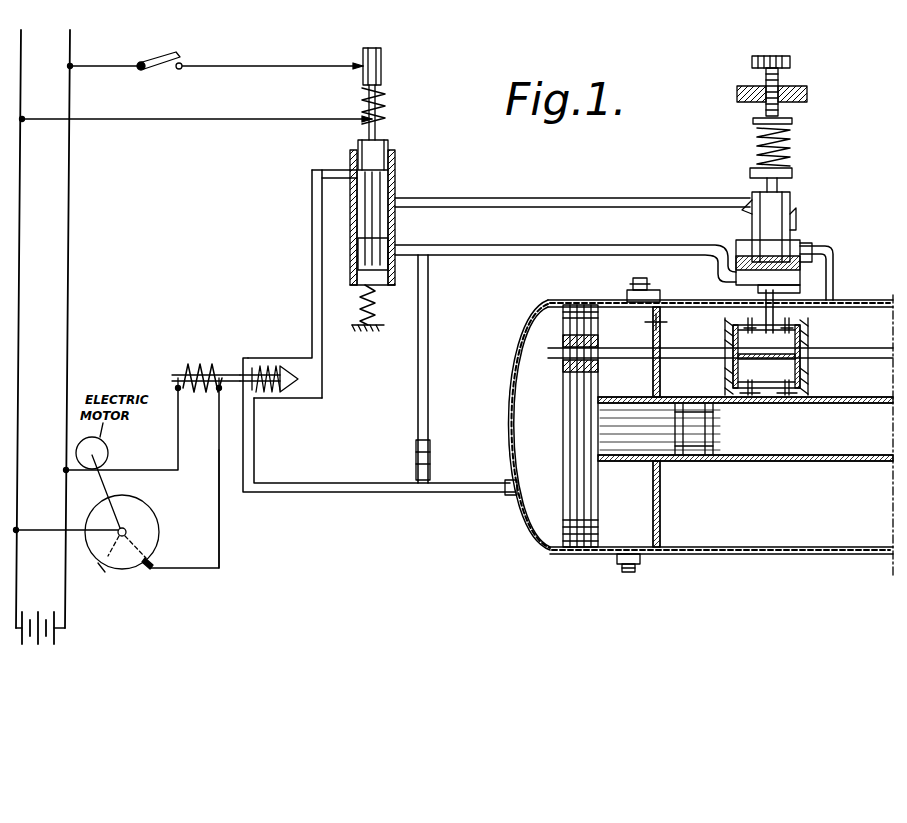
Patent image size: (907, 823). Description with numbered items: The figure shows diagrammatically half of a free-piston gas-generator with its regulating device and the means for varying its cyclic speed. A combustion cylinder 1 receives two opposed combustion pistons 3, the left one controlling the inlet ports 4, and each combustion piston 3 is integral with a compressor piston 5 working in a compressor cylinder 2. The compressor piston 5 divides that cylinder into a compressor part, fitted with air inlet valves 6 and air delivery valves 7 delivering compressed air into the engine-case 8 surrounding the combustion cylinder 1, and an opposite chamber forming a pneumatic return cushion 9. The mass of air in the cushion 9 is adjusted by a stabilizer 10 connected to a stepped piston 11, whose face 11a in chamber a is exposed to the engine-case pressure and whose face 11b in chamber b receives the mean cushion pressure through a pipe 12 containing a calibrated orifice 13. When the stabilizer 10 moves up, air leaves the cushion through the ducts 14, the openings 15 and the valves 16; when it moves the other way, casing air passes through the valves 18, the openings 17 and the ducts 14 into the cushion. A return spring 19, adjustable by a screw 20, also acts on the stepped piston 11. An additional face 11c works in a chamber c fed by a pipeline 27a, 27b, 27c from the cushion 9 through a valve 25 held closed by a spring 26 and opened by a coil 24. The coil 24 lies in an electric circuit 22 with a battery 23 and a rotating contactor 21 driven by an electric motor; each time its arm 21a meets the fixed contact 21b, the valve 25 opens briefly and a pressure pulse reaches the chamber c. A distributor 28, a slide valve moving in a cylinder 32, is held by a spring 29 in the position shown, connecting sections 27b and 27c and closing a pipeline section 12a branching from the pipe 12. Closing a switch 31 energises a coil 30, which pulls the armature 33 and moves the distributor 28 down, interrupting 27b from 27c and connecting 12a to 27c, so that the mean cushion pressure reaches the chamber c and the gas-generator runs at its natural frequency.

The combustion cylinder 1 is at (855, 446).
The compressor cylinder 2 is at (560, 548).
The combustion piston 3 is at (660, 435).
The inlet ports 4 is at (730, 420).
The compressor piston 5 is at (565, 518).
The air inlet valves 6 is at (636, 550).
The air delivery valves 7 is at (668, 304).
The engine-case 8 is at (790, 538).
The pneumatic return energy accumulator (cushion) 9 is at (528, 458).
The stabilizer 10 is at (808, 352).
The stepped piston 11 is at (790, 238).
The face of stepped piston 11a is at (740, 254).
The face of stepped piston 11b is at (834, 262).
The active face of stepped piston 11c is at (748, 204).
The pipe 12 is at (430, 318).
The pipeline section 12a is at (438, 238).
The calibrated orifice 13 is at (430, 450).
The ducts 14 is at (700, 355).
The openings of stabilizer 15 is at (724, 366).
The valves of stabilizer 16 is at (784, 396).
The openings of stabilizer 17 is at (740, 342).
The valves of stabilizer 18 is at (802, 326).
The return spring 19 is at (792, 136).
The screw 20 is at (790, 80).
The periodically acting control member (rotating electric contactor) 21 is at (148, 517).
The arm 21a is at (106, 576).
The fixed contact 21b is at (156, 562).
The electric circuit 22 is at (222, 516).
The battery 23 is at (36, 616).
The coil 24 is at (196, 388).
The valve 25 is at (286, 366).
The spring 26 is at (262, 366).
The pipeline section 27a is at (350, 482).
The pipeline section 27b is at (310, 258).
The pipeline section 27c is at (525, 197).
The distributor (slide valve) 28 is at (388, 152).
The spring 29 is at (362, 292).
The coil 30 is at (388, 104).
The switch 31 is at (156, 62).
The cylinder 32 is at (350, 208).
The armature 33 is at (363, 58).
The chamber a is at (812, 248).
The chamber b is at (792, 290).
The chamber c is at (792, 214).